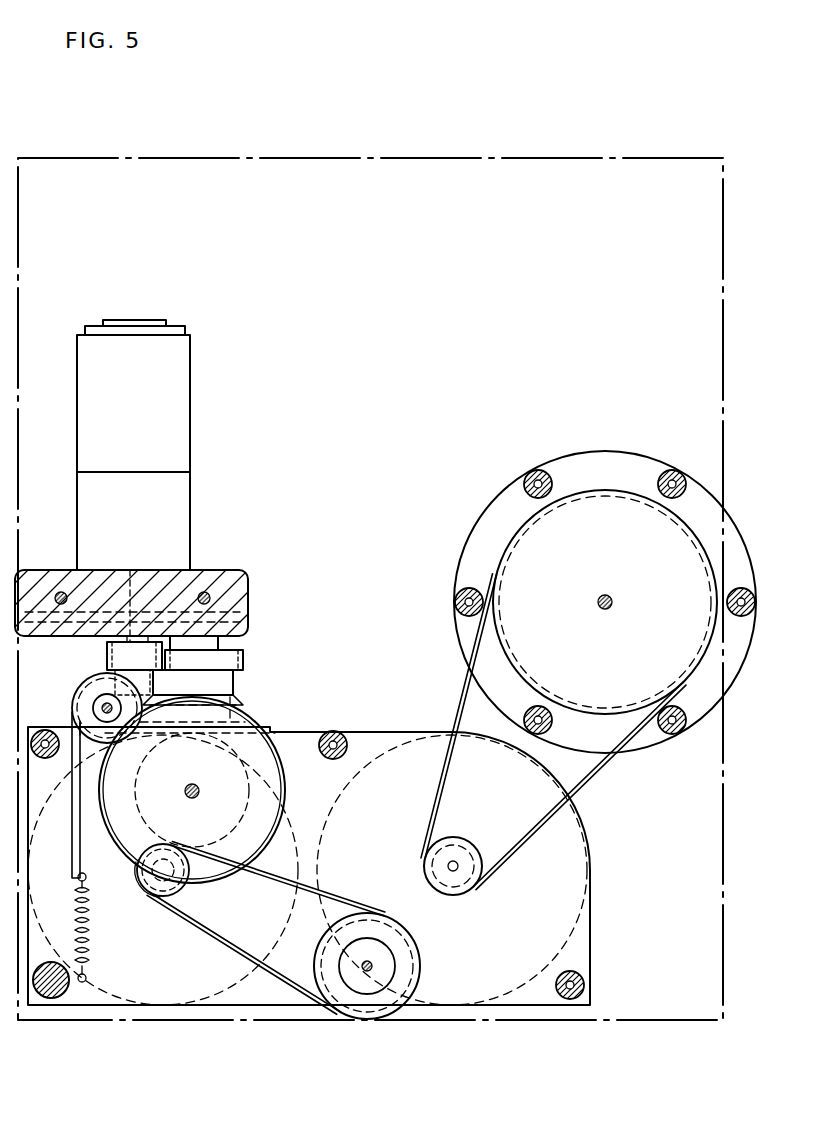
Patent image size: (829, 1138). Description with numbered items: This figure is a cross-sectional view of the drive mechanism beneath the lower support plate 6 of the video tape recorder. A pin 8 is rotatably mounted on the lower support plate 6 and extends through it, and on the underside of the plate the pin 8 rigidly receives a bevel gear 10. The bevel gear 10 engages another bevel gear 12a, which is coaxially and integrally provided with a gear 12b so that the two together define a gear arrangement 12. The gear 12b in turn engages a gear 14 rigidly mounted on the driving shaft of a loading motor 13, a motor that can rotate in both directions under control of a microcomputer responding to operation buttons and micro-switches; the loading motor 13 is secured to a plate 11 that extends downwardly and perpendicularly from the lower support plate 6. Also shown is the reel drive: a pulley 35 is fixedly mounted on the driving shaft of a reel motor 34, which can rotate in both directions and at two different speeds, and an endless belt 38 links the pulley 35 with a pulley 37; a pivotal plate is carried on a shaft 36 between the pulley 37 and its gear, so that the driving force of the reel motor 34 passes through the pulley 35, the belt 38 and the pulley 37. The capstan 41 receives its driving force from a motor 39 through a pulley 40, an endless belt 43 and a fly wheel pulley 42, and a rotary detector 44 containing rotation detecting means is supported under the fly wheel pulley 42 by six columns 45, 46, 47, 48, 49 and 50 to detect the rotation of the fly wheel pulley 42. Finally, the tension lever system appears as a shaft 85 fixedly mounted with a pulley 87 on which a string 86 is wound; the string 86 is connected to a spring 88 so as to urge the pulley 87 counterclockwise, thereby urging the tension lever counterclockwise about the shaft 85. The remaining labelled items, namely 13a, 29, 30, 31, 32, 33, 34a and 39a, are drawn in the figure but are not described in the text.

The lower support plate 6 is at (524, 1021).
The pin 8 is at (195, 797).
The bevel gear 10 is at (262, 728).
The plate 11 is at (246, 572).
The gear arrangement 12 is at (236, 682).
The bevel gear 12a is at (258, 708).
The gear 12b is at (243, 655).
The loading motor 13 is at (190, 493).
The motor shaft 13a is at (128, 642).
The gear 14 is at (107, 658).
The pivot post 29 is at (52, 1000).
The screw 30 is at (45, 732).
The screw 31 is at (340, 738).
The screw 32 is at (586, 989).
The base plate 33 is at (560, 934).
The reel motor 34 is at (197, 1008).
The pulley 34a is at (178, 898).
The pulley 35 is at (140, 895).
The shaft 36 is at (371, 972).
The pulley 37 is at (353, 1017).
The endless belt 38 is at (272, 980).
The motor 39 is at (566, 890).
The shaft 39a is at (458, 868).
The pulley 40 is at (450, 895).
The capstan 41 is at (612, 598).
The fly wheel pulley 42 is at (500, 550).
The endless belt 43 is at (596, 768).
The rotary detector 44 is at (740, 658).
The column 45 is at (538, 470).
The column 46 is at (670, 472).
The column 47 is at (740, 588).
The column 48 is at (670, 735).
The column 49 is at (536, 735).
The column 50 is at (462, 596).
The shaft 85 is at (110, 713).
The string 86 is at (73, 842).
The pulley 87 is at (97, 732).
The spring 88 is at (90, 955).